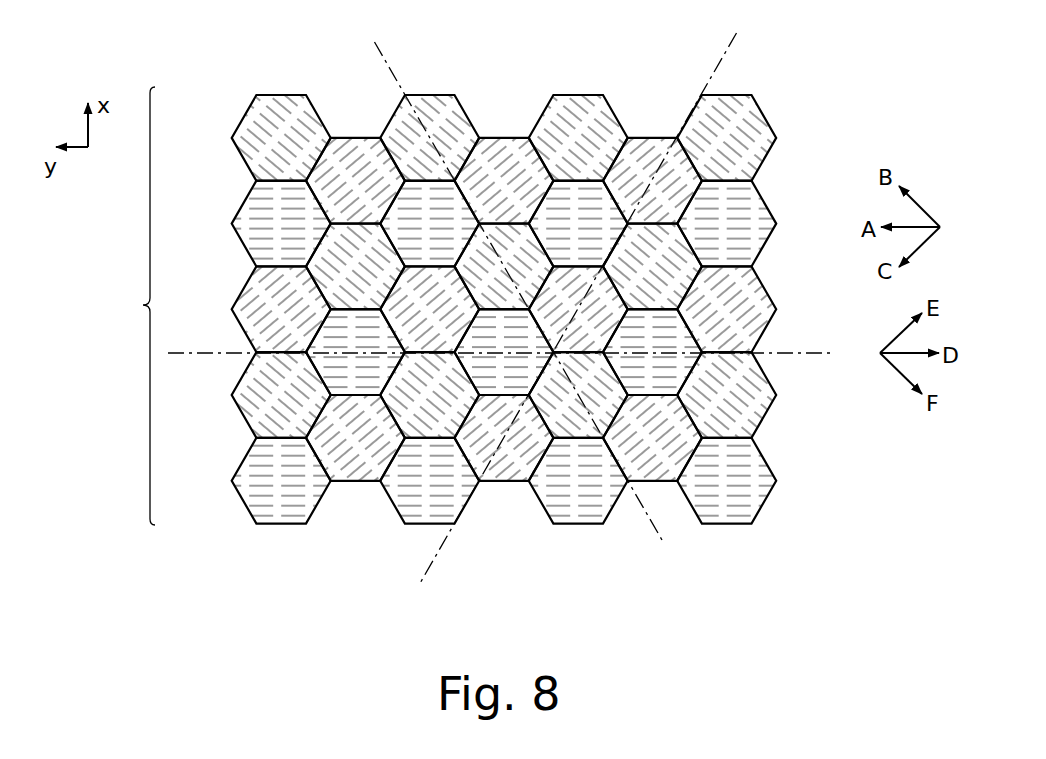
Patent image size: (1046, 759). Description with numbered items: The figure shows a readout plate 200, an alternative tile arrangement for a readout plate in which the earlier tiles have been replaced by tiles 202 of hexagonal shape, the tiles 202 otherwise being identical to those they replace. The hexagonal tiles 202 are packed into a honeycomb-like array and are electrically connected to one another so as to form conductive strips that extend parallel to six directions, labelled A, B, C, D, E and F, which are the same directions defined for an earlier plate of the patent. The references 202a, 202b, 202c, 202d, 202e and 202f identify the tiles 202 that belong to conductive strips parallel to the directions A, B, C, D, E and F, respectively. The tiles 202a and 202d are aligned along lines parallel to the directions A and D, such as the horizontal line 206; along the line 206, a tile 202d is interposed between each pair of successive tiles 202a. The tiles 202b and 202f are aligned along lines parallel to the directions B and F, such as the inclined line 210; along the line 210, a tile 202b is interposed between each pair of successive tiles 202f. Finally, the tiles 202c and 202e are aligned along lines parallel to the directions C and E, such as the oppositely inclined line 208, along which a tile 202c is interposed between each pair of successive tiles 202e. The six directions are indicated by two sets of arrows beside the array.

The readout plate 200 is at (478, 327).
The tiles 202 is at (263, 122).
The tiles belonging to conductive strips parallel to direction A 202a is at (283, 508).
The tiles belonging to conductive strips parallel to direction B 202b is at (737, 125).
The tiles belonging to conductive strips parallel to direction C 202c is at (503, 460).
The tiles belonging to conductive strips parallel to direction D 202d is at (453, 500).
The tiles belonging to conductive strips parallel to direction E 202e is at (360, 483).
The tiles belonging to conductive strips parallel to direction F 202f is at (735, 410).
The line 206 is at (207, 357).
The line 208 is at (722, 60).
The line 210 is at (391, 67).